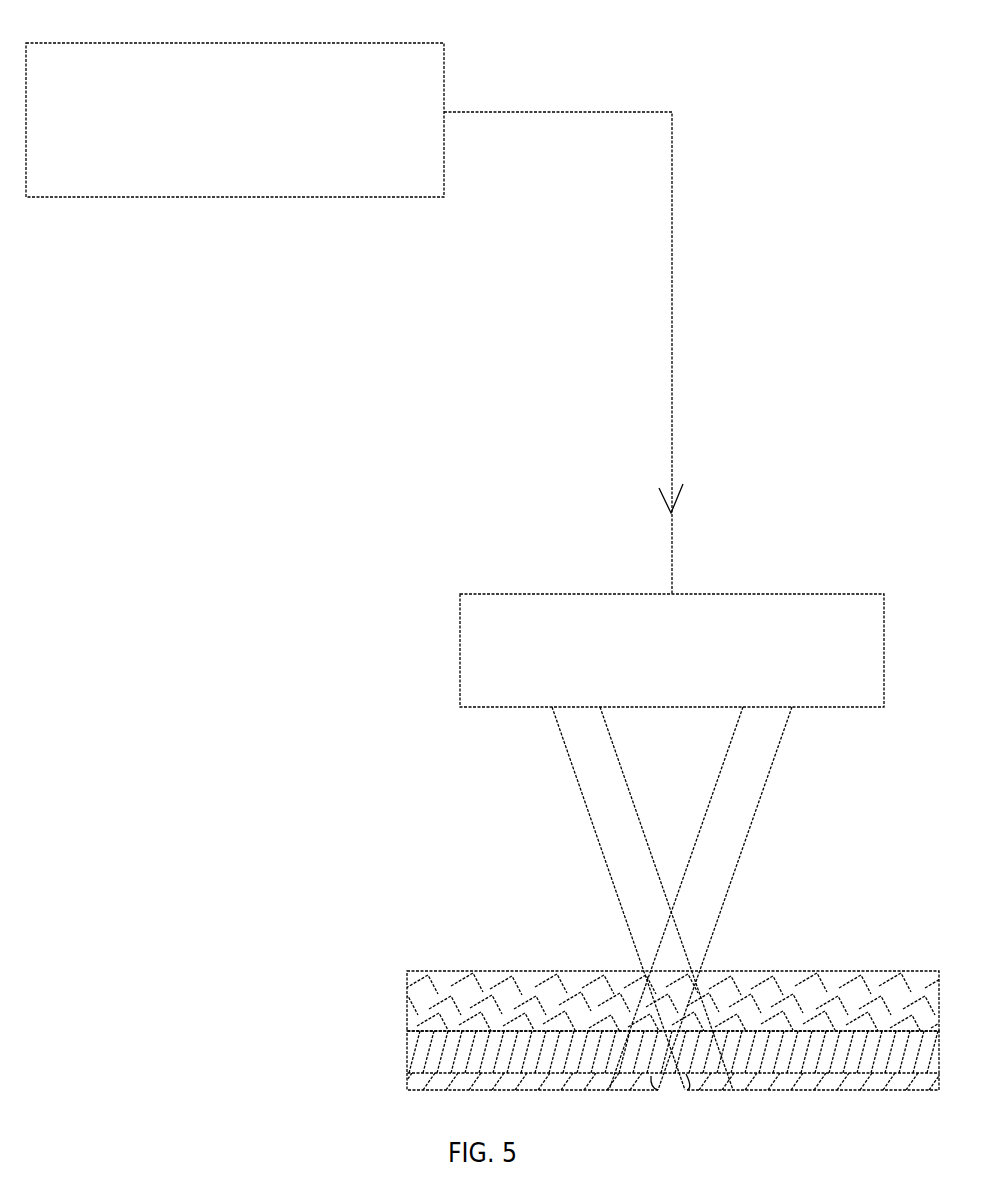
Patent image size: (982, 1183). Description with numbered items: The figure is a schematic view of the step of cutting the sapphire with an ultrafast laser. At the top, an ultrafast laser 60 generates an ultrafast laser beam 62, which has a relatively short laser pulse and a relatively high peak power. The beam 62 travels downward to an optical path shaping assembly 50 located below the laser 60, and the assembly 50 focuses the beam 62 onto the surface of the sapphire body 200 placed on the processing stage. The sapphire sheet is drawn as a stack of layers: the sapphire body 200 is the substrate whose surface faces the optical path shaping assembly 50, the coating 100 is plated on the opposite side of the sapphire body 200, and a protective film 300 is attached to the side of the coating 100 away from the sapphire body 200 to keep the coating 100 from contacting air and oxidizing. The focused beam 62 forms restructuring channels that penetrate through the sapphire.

The ultrafast laser 60 is at (352, 97).
The ultrafast laser beam 62 is at (672, 361).
The optical path shaping assembly 50 is at (508, 648).
The sapphire body 200 is at (442, 1000).
The coating 100 is at (440, 1053).
The protective film 300 is at (433, 1080).